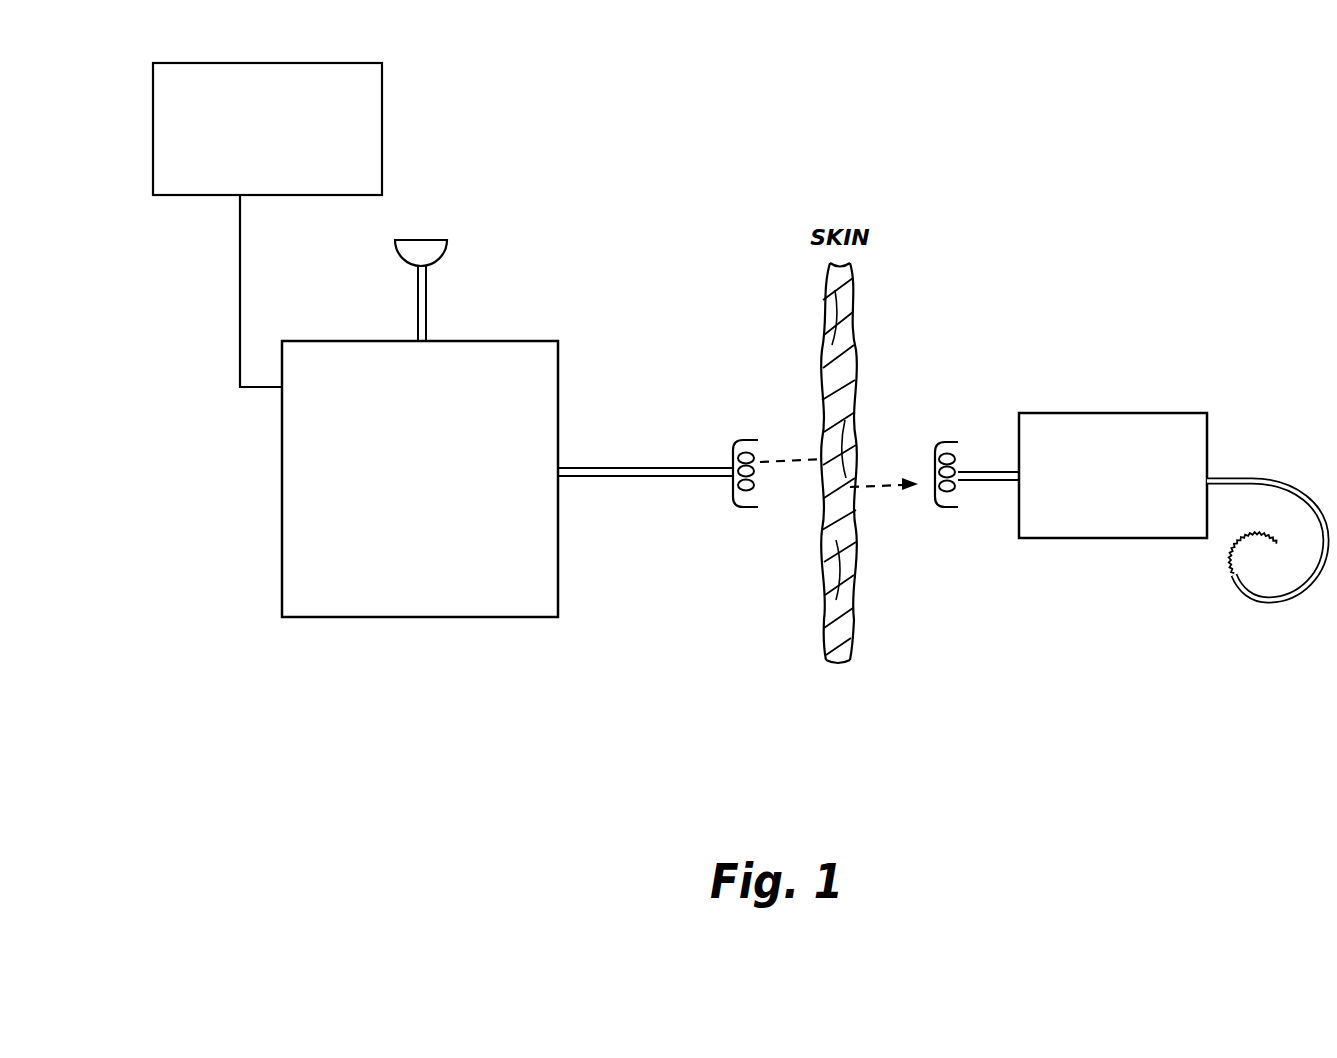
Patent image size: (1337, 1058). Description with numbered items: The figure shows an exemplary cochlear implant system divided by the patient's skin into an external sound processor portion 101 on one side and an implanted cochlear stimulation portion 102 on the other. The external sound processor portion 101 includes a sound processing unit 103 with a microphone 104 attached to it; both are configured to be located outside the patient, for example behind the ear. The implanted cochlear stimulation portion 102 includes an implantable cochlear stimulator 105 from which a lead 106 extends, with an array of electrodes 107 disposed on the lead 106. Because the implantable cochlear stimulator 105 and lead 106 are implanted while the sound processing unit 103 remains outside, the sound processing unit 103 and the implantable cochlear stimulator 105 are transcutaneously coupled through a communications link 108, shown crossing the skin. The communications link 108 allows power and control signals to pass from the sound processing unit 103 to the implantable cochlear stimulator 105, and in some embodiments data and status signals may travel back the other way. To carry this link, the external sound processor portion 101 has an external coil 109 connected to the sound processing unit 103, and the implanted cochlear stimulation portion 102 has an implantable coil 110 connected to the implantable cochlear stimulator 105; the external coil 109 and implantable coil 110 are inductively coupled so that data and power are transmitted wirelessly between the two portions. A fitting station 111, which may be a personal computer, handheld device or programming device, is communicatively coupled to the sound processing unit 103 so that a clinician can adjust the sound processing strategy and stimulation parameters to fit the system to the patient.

The external sound processor portion 101 is at (233, 685).
The implanted cochlear stimulation portion 102 is at (873, 693).
The sound processing unit 103 is at (282, 432).
The microphone 104 is at (421, 240).
The implantable cochlear stimulator 105 is at (1118, 413).
The lead 106 is at (1300, 598).
The array of electrodes 107 is at (1230, 586).
The communications link 108 is at (873, 487).
The external coil 109 is at (745, 508).
The implantable coil 110 is at (940, 508).
The fitting station 111 is at (248, 166).